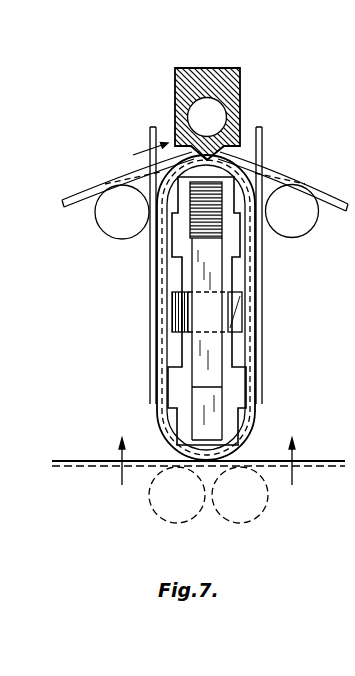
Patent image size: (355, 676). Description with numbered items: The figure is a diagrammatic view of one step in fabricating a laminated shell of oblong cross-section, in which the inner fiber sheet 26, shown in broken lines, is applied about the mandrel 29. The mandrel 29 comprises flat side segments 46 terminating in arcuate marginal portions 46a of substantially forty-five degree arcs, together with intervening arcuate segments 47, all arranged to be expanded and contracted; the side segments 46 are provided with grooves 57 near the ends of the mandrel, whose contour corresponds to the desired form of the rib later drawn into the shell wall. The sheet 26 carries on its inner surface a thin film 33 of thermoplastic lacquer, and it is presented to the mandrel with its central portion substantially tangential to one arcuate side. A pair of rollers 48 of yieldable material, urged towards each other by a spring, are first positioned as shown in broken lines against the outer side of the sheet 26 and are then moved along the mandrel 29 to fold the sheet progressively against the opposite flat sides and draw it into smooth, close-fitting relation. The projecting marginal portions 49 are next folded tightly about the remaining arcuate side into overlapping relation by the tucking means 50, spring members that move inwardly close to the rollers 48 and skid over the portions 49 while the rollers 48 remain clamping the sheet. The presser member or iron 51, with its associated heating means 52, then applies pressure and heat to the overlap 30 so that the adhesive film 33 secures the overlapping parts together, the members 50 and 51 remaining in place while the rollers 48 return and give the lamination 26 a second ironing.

The fiber sheet 26 is at (157, 329).
The mandrel 29 is at (178, 348).
The overlap 30 is at (206, 158).
The thin film of thermoplastic lacquer 33 is at (89, 459).
The flat side segments 46 is at (176, 296).
The arcuate marginal portions 46a is at (243, 197).
The arcuate segments 47 is at (174, 223).
The rollers 48 is at (107, 219).
The projecting marginal portions 49 is at (148, 133).
The tucking means 50 is at (108, 178).
The presser member or iron 51 is at (183, 84).
The heating means 52 is at (200, 112).
The grooves 57 is at (158, 378).